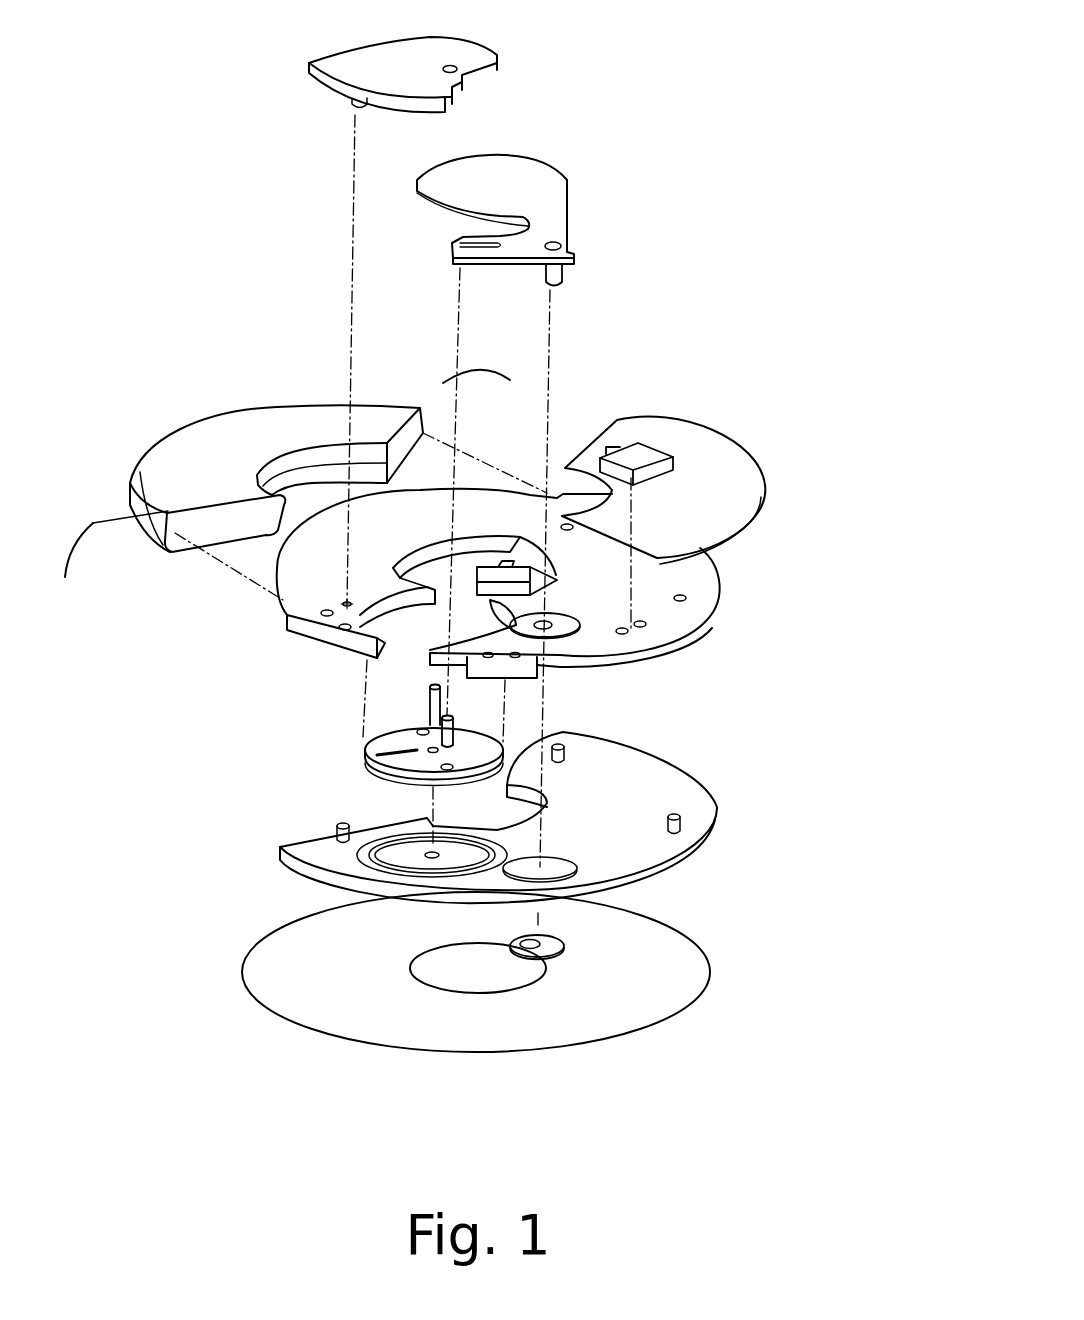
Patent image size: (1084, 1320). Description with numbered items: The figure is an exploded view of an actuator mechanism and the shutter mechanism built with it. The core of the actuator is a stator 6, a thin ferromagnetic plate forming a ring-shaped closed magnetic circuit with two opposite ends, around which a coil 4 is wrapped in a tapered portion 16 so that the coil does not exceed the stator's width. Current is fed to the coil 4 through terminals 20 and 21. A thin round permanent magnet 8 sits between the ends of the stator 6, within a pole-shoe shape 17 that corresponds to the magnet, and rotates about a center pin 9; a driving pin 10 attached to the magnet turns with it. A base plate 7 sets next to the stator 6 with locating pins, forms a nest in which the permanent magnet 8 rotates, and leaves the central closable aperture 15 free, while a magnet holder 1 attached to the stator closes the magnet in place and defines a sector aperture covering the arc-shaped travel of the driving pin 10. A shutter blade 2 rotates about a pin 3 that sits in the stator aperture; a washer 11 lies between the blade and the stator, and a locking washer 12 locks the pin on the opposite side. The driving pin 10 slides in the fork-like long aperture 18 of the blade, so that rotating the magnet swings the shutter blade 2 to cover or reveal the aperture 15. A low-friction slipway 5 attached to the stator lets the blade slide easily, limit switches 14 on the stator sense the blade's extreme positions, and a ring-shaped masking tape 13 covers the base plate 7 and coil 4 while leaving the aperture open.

The magnet holder 1 is at (310, 63).
The shutter blade 2 is at (415, 188).
The pin 3 is at (565, 282).
The coil 4 is at (419, 408).
The slipway 5 is at (617, 420).
The stator 6 is at (660, 647).
The base plate 7 is at (719, 813).
The permanent magnet 8 is at (364, 757).
The center pin 9 is at (428, 703).
The driving pin 10 is at (457, 732).
The washer 11 is at (578, 617).
The locking washer 12 is at (567, 943).
The masking tape 13 is at (710, 993).
The limit switches 14 is at (555, 578).
The aperture 15 is at (533, 582).
The tapered portion 16 is at (277, 582).
The shape 17 is at (373, 636).
The long aperture 18 is at (452, 250).
The terminal 20 is at (93, 523).
The terminal 21 is at (443, 383).